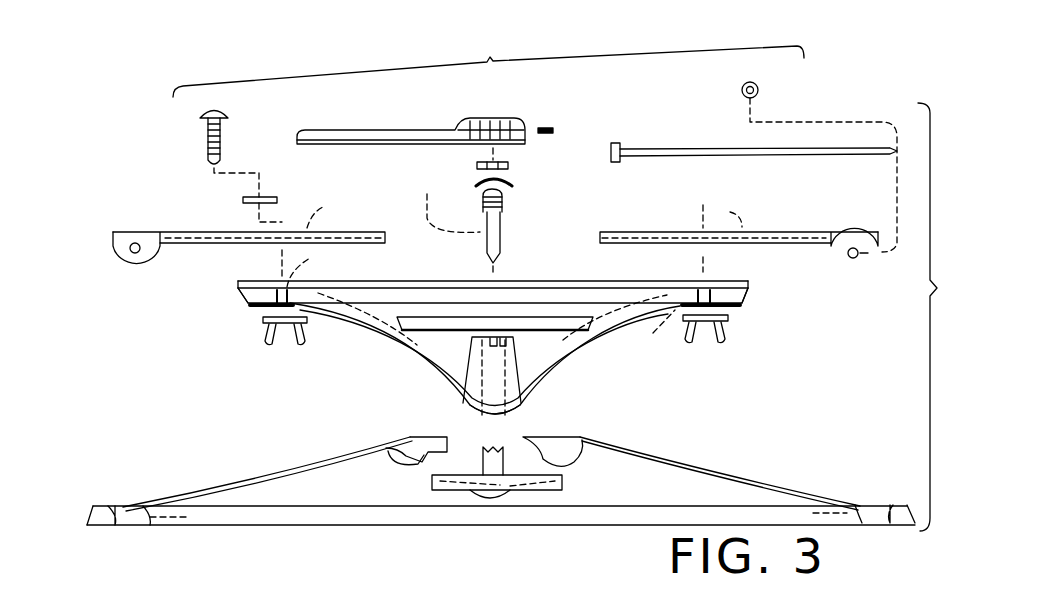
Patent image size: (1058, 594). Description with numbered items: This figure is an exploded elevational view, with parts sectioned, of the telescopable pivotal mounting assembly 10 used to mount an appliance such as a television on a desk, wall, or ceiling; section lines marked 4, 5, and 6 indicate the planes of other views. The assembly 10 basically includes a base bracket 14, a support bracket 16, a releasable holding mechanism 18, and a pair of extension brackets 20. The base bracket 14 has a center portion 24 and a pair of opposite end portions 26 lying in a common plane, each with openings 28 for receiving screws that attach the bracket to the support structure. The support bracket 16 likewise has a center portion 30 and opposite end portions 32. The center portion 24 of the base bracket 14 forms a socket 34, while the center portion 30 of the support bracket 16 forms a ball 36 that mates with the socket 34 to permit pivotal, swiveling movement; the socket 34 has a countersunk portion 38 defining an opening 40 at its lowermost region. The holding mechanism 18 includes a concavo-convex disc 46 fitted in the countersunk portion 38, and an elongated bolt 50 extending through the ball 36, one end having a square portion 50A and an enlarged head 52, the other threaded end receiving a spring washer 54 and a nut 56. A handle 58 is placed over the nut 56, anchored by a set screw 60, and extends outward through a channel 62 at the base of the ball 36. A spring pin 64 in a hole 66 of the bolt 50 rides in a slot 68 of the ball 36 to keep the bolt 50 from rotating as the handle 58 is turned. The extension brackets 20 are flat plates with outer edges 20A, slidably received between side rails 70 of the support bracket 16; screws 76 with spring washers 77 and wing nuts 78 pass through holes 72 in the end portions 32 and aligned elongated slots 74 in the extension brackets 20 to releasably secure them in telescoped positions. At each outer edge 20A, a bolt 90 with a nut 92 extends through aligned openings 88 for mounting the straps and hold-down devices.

The section line 4- 4 is at (102, 457).
The section line 5- 5 is at (237, 268).
The section line 6- 6 is at (100, 243).
The telescopable pivotal mounting assembly 10 is at (858, 100).
The base bracket 14 is at (287, 480).
The support bracket 16 is at (553, 277).
The releasable holding mechanism 18 is at (538, 100).
The extension brackets 20 is at (205, 227).
The outer edges 20A is at (142, 229).
The center portion 24 is at (637, 448).
The opposite end portions 26 is at (143, 506).
The openings 28 is at (108, 506).
The center portion 30 is at (561, 386).
The opposite end portions 32 is at (247, 305).
The socket 34 is at (440, 433).
The ball 36 is at (543, 411).
The countersunk portion 38 is at (402, 458).
The opening 40 is at (580, 470).
The concavo-convex disc 46 is at (448, 491).
The elongated bolt 50 is at (503, 240).
The square portion of bolt 50A is at (493, 500).
The enlarged head 52 is at (511, 497).
The spring washer 54 is at (478, 183).
The nut 56 is at (509, 165).
The handle 58 is at (378, 130).
The set screw 60 is at (556, 130).
The channel 62 is at (450, 327).
The spring pin 64 is at (427, 192).
The hole 66 is at (483, 210).
The slot 68 is at (497, 345).
The side rails 70 is at (408, 279).
The holes 72 is at (481, 302).
The elongated parallel slots 74 is at (512, 237).
The screws 76 is at (223, 133).
The spring washers 77 is at (274, 197).
The wing nuts 78 is at (283, 338).
The openings 88 is at (133, 256).
The bolt 90 is at (705, 146).
The nut 92 is at (762, 90).